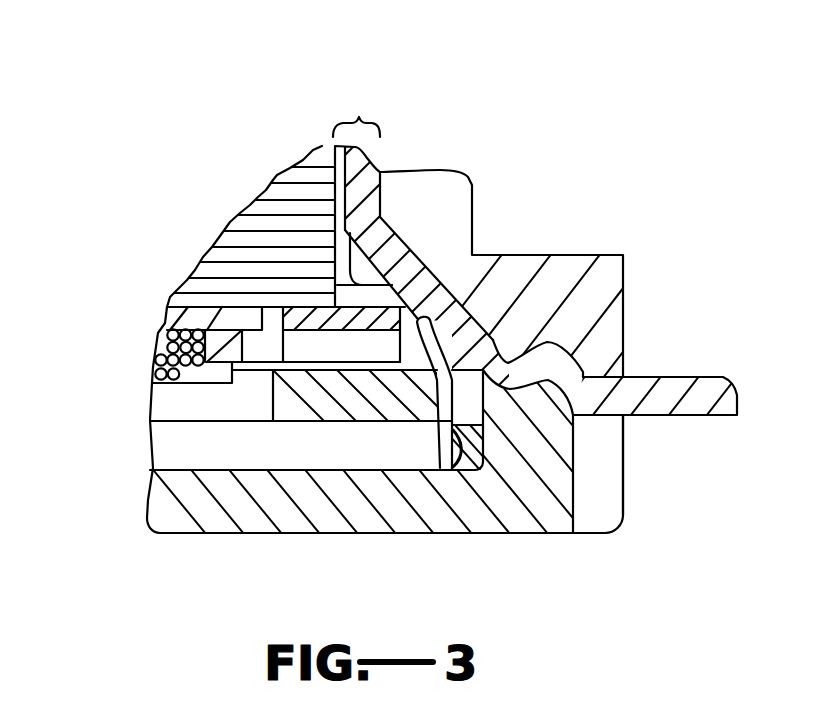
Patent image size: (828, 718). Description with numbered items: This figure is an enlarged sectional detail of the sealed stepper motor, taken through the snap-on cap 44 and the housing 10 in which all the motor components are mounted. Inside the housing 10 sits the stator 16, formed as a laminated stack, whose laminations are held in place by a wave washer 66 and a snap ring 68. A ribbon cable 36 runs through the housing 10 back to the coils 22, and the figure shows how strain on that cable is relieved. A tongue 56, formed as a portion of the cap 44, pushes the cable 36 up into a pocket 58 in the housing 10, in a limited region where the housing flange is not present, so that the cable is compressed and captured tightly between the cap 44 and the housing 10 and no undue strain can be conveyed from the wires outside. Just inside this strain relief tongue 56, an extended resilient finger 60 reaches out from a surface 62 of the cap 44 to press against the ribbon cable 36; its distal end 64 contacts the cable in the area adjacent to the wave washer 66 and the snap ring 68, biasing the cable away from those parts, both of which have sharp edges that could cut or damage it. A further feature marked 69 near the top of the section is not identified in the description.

The housing 10 is at (488, 175).
The stator 16 is at (265, 222).
The coils 22 is at (172, 362).
The ribbon cable 36 is at (388, 247).
The snap-on cap 44 is at (440, 513).
The tongue 56 is at (537, 418).
The pocket 58 is at (572, 357).
The extended finger 60 is at (435, 445).
The surface 62 is at (243, 494).
The distal end 64 is at (437, 348).
The wave washer 66 is at (380, 316).
The snap ring 68 is at (318, 407).
The gap 69 is at (359, 117).